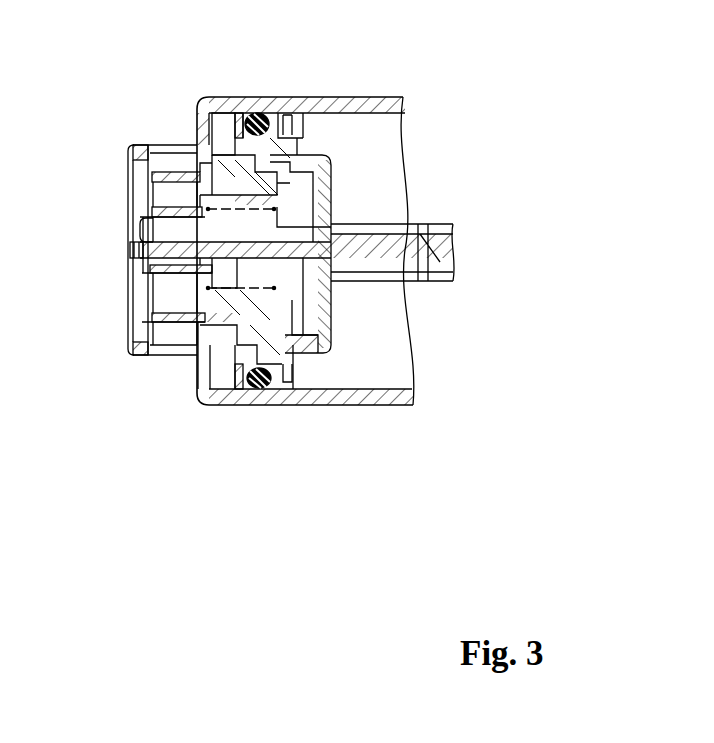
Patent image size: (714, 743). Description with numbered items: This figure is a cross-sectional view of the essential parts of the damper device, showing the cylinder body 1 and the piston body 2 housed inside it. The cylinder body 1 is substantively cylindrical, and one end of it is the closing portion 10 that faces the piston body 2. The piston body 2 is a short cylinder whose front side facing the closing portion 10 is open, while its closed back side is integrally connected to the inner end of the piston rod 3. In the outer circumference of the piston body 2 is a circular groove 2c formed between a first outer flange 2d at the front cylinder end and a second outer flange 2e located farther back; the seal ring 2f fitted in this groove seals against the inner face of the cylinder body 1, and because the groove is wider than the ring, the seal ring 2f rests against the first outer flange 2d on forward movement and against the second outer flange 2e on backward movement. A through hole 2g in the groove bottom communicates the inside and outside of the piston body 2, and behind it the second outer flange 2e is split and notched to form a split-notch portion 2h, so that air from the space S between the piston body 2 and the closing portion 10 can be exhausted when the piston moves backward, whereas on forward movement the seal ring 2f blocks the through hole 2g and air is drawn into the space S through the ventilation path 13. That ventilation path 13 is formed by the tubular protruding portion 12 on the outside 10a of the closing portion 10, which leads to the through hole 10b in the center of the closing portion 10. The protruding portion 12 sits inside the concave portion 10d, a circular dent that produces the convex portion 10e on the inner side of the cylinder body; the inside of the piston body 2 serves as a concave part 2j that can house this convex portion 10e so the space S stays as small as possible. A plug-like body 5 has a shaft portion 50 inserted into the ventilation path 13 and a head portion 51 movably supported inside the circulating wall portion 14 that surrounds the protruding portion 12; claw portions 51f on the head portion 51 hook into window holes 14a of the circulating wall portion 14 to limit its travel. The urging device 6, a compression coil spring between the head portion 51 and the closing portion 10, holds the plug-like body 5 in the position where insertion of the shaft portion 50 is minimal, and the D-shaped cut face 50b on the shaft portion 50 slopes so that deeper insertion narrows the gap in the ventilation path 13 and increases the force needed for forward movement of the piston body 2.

The cylinder body 1 is at (395, 97).
The piston body 2 is at (312, 155).
The circular groove 2c is at (284, 389).
The first outer flange 2d is at (222, 389).
The second outer flange 2e is at (297, 370).
The seal ring 2f is at (260, 389).
The through hole 2g is at (250, 389).
The split-notch portion 2h is at (289, 389).
The concave part 2j is at (305, 328).
The piston rod 3 is at (443, 251).
The plug-like body 5 is at (150, 180).
The urging device 6 is at (222, 200).
The closing portion 10 is at (197, 121).
The outside of the closing portion 10a is at (185, 390).
The through hole 10b is at (336, 224).
The concave portion 10d is at (302, 172).
The convex portion 10e is at (335, 163).
The protruding portion 12 is at (147, 270).
The ventilation path 13 is at (286, 266).
The circulating wall portion 14 is at (134, 350).
The window hole 14a is at (173, 145).
The shaft portion 50 is at (138, 234).
The cut face 50b is at (150, 207).
The head portion 51 is at (147, 320).
The claw portion 51f is at (147, 145).
The space S is at (335, 193).